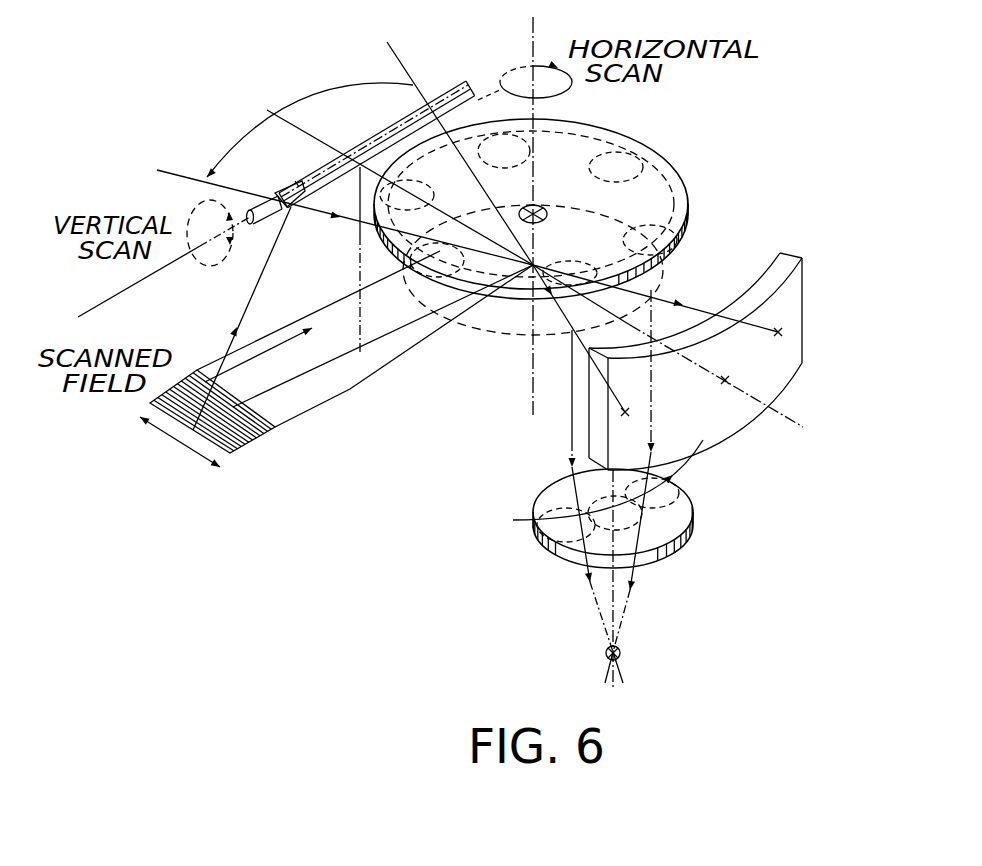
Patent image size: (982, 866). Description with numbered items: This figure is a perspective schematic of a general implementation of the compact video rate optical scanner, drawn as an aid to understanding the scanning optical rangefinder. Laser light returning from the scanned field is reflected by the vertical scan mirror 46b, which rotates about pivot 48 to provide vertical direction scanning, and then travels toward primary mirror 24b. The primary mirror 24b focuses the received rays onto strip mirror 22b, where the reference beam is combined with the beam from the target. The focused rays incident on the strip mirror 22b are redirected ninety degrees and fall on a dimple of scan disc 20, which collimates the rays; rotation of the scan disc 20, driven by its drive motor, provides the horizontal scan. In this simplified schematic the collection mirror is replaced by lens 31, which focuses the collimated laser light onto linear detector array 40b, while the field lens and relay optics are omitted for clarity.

The scan disc 20 is at (630, 140).
The strip mirror 22b is at (580, 346).
The primary mirror 24b is at (806, 282).
The lens 31 is at (690, 496).
The linear detector array 40b is at (622, 651).
The vertical scan mirror 46b is at (393, 131).
The pivot 48 is at (259, 198).